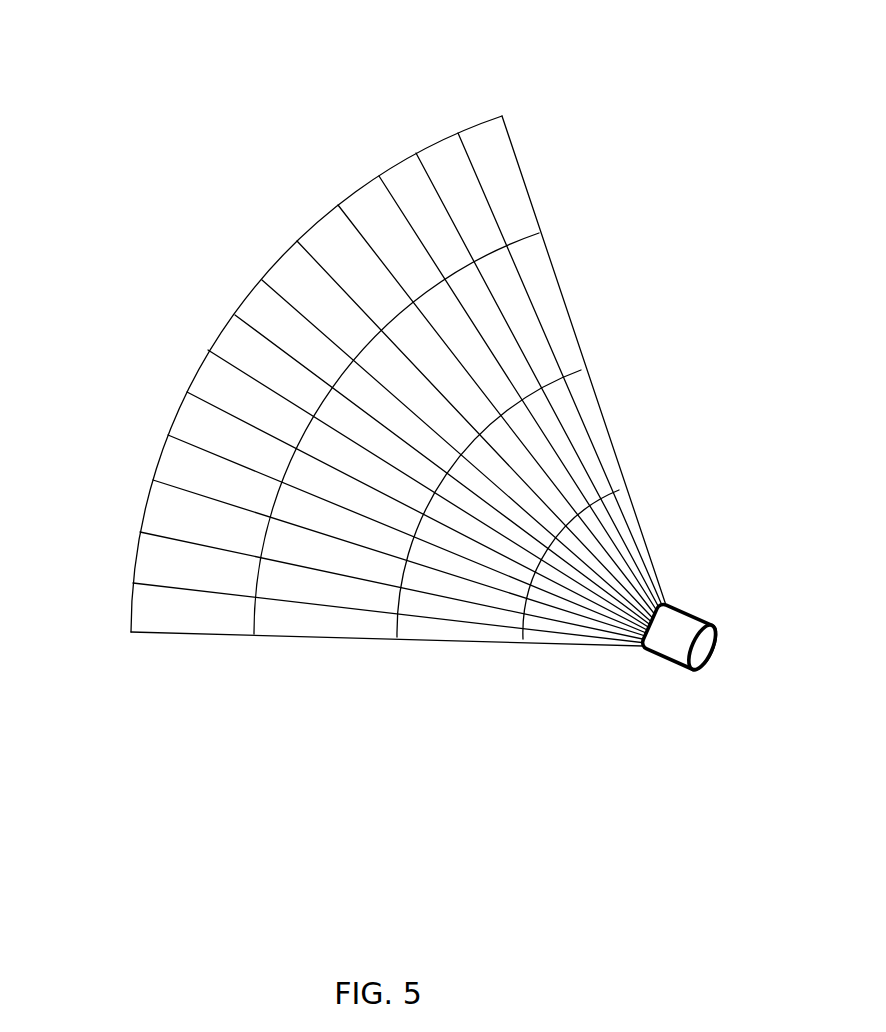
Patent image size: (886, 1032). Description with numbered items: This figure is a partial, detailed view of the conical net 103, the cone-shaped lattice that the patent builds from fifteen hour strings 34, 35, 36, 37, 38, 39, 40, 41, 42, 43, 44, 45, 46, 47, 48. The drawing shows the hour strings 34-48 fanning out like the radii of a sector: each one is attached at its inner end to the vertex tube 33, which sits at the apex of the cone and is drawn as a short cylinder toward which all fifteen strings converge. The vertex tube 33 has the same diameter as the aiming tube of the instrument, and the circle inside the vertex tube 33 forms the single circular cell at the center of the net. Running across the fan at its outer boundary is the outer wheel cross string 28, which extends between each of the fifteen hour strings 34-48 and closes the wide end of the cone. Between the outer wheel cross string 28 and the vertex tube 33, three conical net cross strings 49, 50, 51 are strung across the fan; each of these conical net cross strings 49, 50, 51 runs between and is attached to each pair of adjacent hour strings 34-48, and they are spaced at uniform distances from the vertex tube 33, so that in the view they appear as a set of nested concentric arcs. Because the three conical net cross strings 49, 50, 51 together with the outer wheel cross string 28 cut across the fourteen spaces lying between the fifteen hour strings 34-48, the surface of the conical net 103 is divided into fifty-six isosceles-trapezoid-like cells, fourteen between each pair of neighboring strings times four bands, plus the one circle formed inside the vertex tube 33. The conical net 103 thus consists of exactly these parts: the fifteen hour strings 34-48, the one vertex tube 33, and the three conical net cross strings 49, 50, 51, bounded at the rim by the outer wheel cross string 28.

The outer wheel cross string 28 is at (512, 147).
The vertex tube 33 is at (684, 642).
The hour string 34 is at (510, 140).
The hour string 35 is at (468, 156).
The hour string 36 is at (428, 175).
The hour string 37 is at (392, 197).
The hour string 38 is at (353, 225).
The hour string 39 is at (314, 259).
The hour string 40 is at (281, 296).
The hour string 41 is at (249, 325).
The hour string 42 is at (229, 363).
The hour string 43 is at (209, 403).
The hour string 44 is at (185, 442).
The hour string 45 is at (177, 488).
The hour string 46 is at (164, 537).
The hour string 47 is at (158, 586).
The hour string 48 is at (156, 633).
The conical net cross string 49 is at (524, 238).
The conical net cross string 50 is at (576, 378).
The conical net cross string 51 is at (612, 490).
The conical net 103 is at (598, 250).